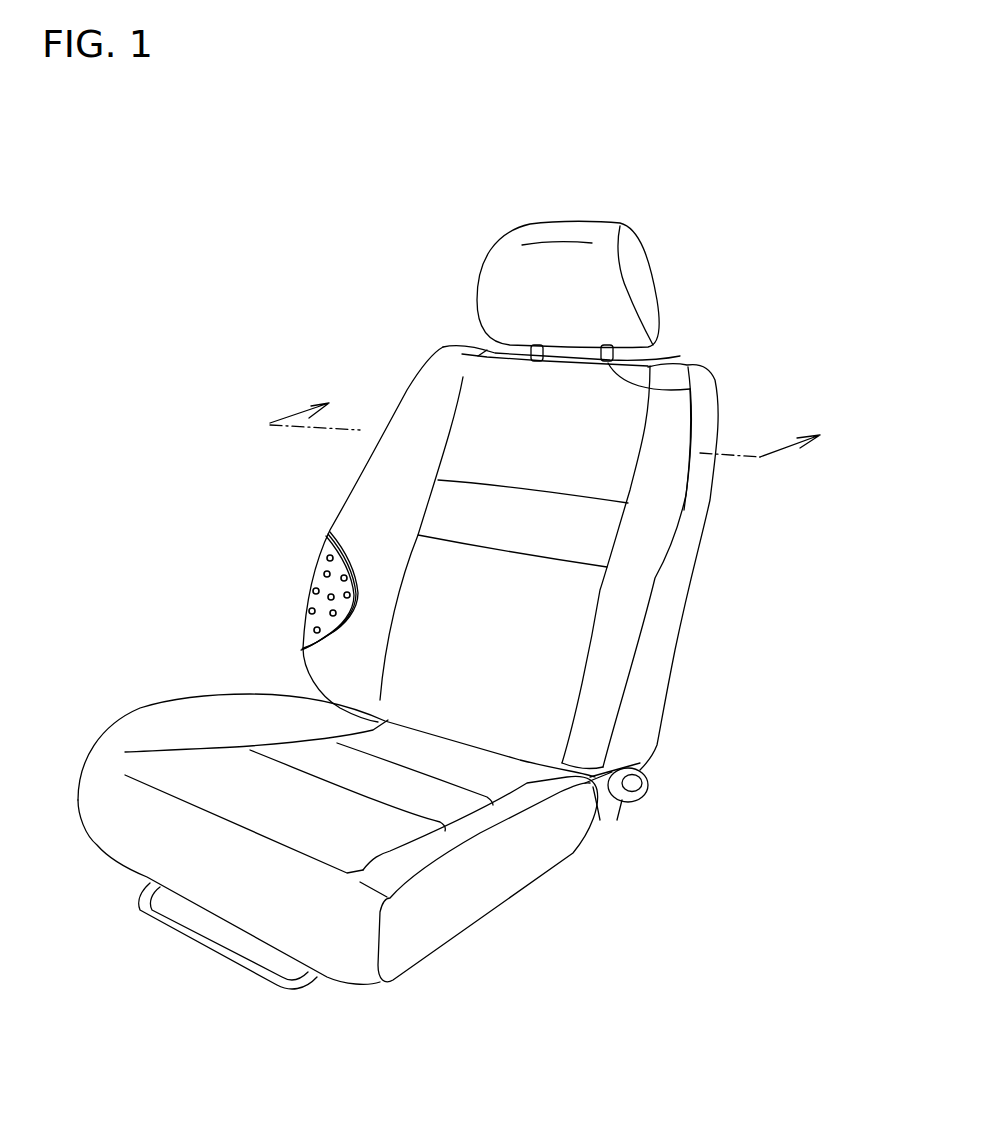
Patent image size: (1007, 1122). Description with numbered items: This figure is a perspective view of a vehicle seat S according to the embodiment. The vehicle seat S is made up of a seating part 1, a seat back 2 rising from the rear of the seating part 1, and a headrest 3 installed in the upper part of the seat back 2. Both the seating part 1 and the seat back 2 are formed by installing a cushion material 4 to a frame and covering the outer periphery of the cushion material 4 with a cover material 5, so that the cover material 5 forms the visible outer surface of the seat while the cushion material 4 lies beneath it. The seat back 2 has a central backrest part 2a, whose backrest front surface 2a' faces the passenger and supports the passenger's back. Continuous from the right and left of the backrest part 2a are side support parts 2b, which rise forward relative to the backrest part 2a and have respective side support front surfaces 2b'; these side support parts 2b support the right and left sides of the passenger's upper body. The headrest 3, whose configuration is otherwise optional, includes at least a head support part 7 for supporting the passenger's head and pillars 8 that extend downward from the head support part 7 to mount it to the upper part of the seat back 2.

The vehicle seat S is at (236, 204).
The seating part 1 is at (548, 916).
The seat back 2 is at (725, 614).
The backrest part 2a is at (596, 564).
The backrest front surface 2a' is at (624, 732).
The side support part 2b is at (569, 531).
The side support front surface 2b' is at (703, 486).
The headrest 3 is at (668, 227).
The cushion material 4 is at (320, 580).
The cover material 5 is at (350, 523).
The head support part 7 is at (640, 298).
The pillar 8 is at (690, 390).